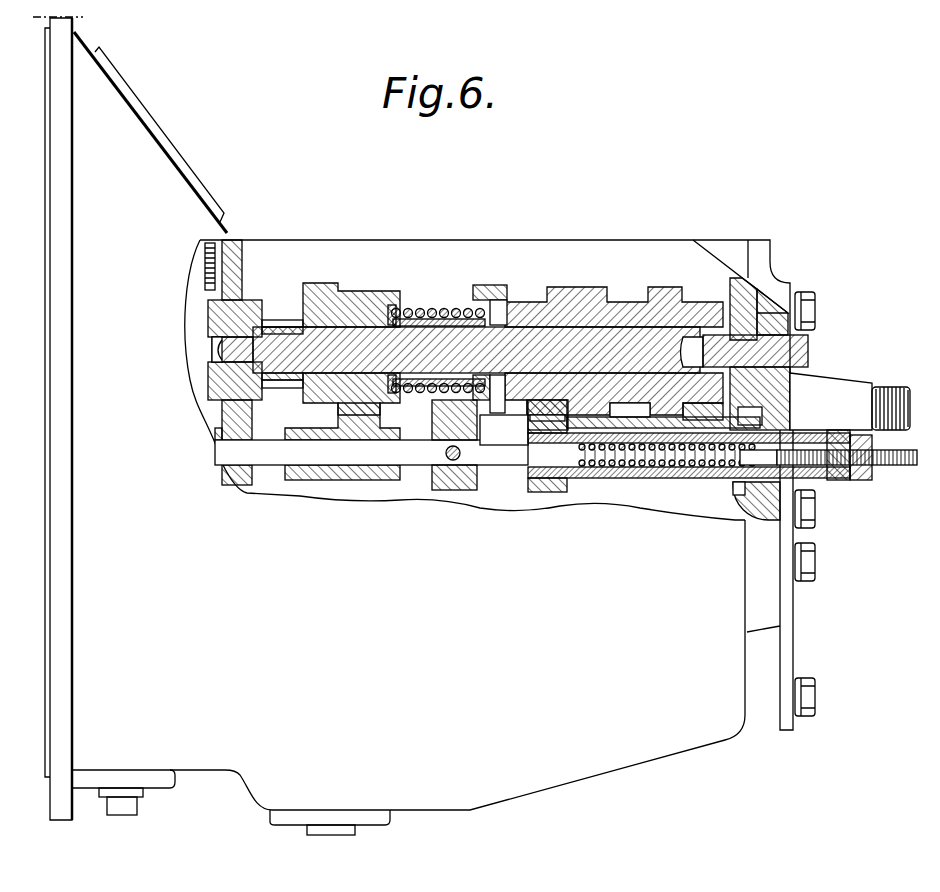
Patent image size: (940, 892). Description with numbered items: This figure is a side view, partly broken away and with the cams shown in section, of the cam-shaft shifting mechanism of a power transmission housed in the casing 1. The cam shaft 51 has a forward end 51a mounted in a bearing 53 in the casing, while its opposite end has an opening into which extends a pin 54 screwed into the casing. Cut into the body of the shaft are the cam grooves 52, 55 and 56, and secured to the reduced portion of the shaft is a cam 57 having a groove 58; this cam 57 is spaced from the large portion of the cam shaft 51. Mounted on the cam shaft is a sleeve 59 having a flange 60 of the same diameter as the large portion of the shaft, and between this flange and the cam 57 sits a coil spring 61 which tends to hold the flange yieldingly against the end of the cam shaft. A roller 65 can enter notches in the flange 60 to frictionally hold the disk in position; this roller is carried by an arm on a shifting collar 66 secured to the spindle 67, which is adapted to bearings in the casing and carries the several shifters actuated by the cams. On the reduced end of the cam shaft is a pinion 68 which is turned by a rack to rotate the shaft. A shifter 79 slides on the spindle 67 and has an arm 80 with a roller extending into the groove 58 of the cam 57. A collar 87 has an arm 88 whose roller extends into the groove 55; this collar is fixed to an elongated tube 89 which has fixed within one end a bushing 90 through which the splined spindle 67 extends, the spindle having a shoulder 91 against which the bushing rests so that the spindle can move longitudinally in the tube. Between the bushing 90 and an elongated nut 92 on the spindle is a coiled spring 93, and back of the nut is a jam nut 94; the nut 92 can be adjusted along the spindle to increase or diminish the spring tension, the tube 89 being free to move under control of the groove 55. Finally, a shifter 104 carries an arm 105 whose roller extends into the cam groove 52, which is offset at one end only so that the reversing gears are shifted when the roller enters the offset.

The casing 1 is at (470, 563).
The cam shaft 51 is at (572, 300).
The forward end 51a is at (215, 345).
The cam groove 52 is at (710, 402).
The bearing 53 is at (225, 374).
The pin 54 is at (733, 347).
The cam groove 55 is at (548, 400).
The cam groove 56 is at (630, 349).
The cam 57 is at (313, 286).
The groove 58 is at (351, 342).
The sleeve 59 is at (437, 305).
The flange 60 is at (485, 285).
The coil spring 61 is at (415, 305).
The roller 65 is at (438, 405).
The shifting collar 66 is at (440, 480).
The spindle 67 is at (490, 462).
The pinion 68 is at (278, 320).
The shifter 79 is at (343, 482).
The arm 80 is at (345, 420).
The collar 87 is at (548, 493).
The arm 88 is at (663, 426).
The elongated tube 89 is at (613, 480).
The bushing 90 is at (547, 432).
The shoulder 91 is at (528, 458).
The elongated nut 92 is at (833, 482).
The coiled spring 93 is at (682, 483).
The jam nut 94 is at (877, 481).
The shifter 104 is at (744, 501).
The arm 105 is at (760, 408).